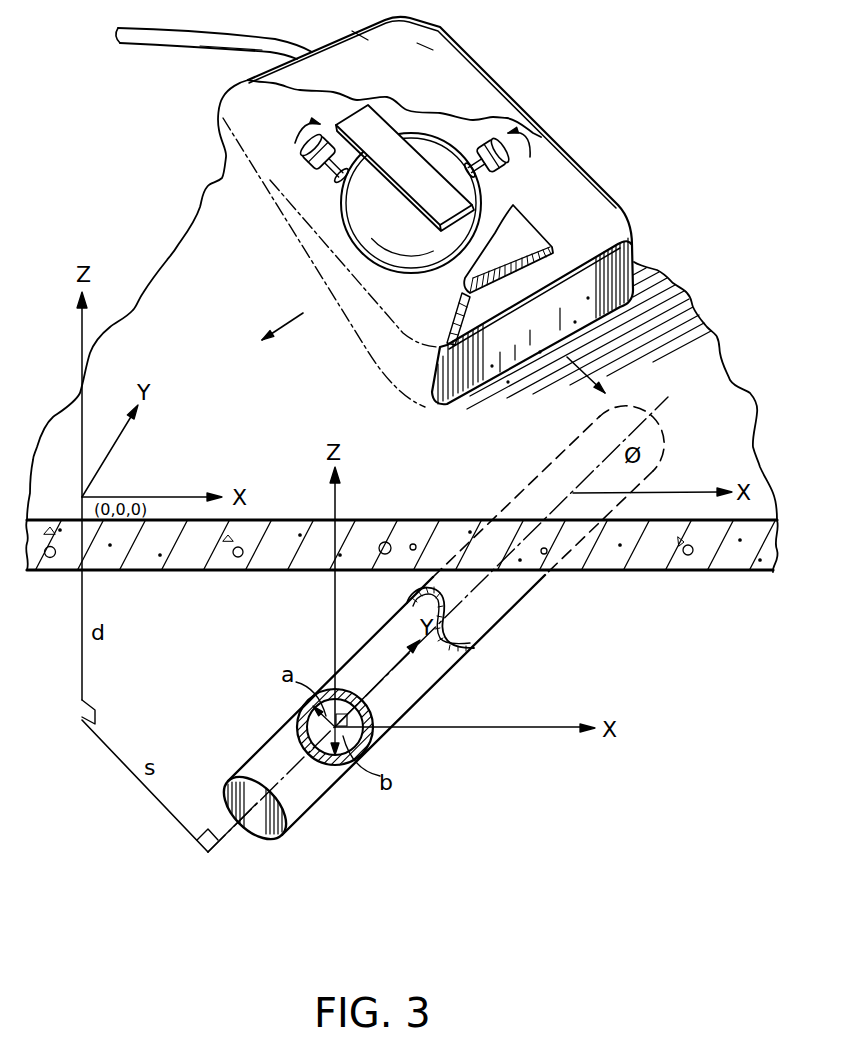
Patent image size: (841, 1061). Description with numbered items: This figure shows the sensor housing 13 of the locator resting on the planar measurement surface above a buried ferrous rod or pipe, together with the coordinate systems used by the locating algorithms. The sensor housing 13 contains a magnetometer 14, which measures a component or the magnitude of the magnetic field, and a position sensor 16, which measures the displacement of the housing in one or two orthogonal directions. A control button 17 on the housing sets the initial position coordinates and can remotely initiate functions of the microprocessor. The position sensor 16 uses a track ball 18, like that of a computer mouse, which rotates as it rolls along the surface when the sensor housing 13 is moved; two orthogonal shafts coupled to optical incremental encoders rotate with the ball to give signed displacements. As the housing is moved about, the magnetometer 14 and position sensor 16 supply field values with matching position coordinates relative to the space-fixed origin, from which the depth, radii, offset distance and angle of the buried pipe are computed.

The sensor housing 13 is at (433, 36).
The magnetometer 14 is at (377, 117).
The position sensor 16 is at (310, 163).
The control button 17 is at (527, 228).
The track ball 18 is at (343, 222).